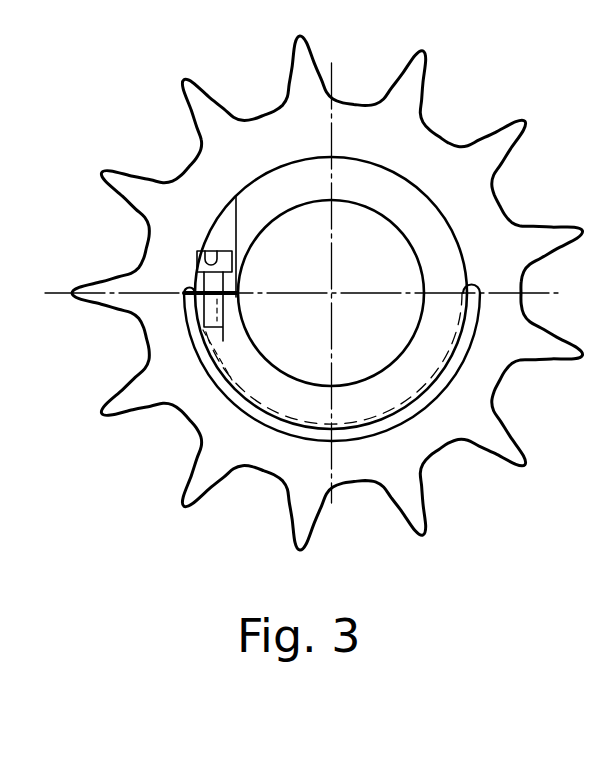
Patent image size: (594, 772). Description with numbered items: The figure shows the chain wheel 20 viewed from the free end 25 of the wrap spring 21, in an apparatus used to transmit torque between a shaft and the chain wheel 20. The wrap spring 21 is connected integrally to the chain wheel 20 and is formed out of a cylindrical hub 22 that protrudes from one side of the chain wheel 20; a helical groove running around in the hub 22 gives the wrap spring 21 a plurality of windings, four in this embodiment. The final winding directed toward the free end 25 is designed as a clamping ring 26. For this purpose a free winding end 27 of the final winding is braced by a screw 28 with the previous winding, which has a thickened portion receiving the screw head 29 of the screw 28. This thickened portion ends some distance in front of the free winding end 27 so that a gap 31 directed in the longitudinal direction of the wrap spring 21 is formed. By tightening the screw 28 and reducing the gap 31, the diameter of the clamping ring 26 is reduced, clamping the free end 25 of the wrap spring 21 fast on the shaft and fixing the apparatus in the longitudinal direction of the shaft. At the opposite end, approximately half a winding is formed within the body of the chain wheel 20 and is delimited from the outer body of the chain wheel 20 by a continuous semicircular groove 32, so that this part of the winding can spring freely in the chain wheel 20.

The chain wheel 20 is at (303, 72).
The wrap spring 21 is at (430, 240).
The cylindrical hub 22 is at (261, 194).
The free end 25 is at (432, 375).
The clamping ring 26 is at (279, 397).
The free winding end 27 is at (237, 289).
The screw 28 is at (210, 323).
The screw head 29 is at (197, 255).
The gap 31 is at (223, 353).
The semicircular groove 32 is at (433, 403).